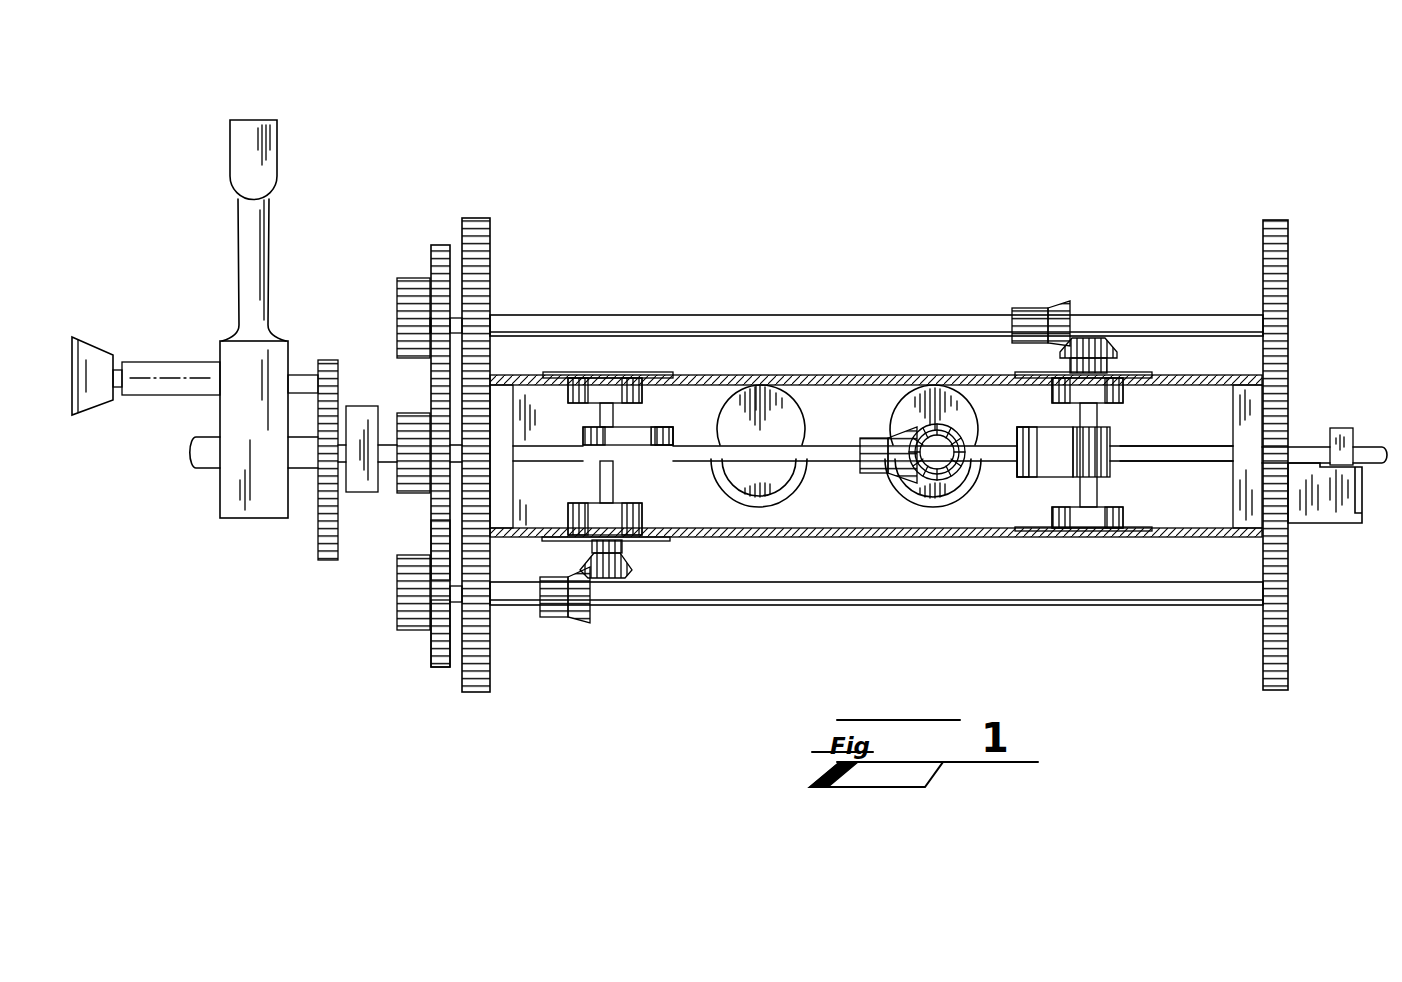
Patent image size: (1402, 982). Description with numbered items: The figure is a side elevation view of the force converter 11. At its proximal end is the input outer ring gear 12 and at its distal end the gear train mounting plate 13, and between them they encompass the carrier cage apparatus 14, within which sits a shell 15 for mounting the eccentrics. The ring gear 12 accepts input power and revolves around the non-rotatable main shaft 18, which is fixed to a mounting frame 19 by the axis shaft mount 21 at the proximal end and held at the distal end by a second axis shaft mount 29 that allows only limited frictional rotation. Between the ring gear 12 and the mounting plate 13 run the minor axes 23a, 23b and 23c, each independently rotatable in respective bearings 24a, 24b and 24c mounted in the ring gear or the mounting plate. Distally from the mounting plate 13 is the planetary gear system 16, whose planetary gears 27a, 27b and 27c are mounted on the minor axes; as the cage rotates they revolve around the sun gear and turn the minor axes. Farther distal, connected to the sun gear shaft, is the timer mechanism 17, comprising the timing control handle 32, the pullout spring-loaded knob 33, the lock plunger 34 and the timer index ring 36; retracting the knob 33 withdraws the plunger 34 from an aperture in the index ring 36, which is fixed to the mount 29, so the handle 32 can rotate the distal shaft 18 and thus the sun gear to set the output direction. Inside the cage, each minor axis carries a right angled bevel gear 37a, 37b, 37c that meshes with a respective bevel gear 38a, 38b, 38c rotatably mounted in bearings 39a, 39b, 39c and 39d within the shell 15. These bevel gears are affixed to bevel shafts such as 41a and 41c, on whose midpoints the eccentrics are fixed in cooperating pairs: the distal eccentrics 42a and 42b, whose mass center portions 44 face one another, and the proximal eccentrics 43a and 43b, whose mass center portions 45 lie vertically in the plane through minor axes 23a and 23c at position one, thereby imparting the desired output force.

The force converter 11 is at (866, 106).
The input outer ring gear 12 is at (1275, 220).
The gear train mounting plate 13 is at (475, 693).
The carrier cage apparatus 14 is at (634, 224).
The shell 15 is at (845, 538).
The planetary gear system 16 is at (404, 184).
The timer mechanism 17 is at (150, 180).
The main shaft 18 is at (302, 470).
The mounting frame 19 is at (1362, 502).
The axis shaft mount 21 is at (1355, 428).
The minor axis 23a is at (637, 315).
The minor axis 23b is at (1195, 465).
The minor axis 23c is at (700, 590).
The bearing 24a is at (410, 297).
The bearing 24b is at (418, 425).
The bearing 24c is at (412, 632).
The planetary gear 27a is at (440, 245).
The planetary gear 27b is at (427, 545).
The planetary gear 27c is at (437, 668).
The axis shaft mount 29 is at (354, 406).
The timing control handle 32 is at (263, 145).
The pullout spring-loaded knob 33 is at (96, 345).
The lock plunger 34 is at (304, 375).
The timer index ring 36 is at (330, 360).
The right angled bevel gear 37a is at (1060, 300).
The right angled bevel gear 37b is at (873, 478).
The right angled bevel gear 37c is at (553, 597).
The bevel gear 38a is at (1083, 340).
The bevel gear 38b is at (960, 470).
The bevel gear 38c is at (628, 572).
The bearing 39a is at (1122, 395).
The bearing 39b is at (918, 490).
The bearing 39c is at (598, 385).
The bearing 39d is at (765, 500).
The bevel shaft 41a is at (1107, 415).
The bevel shaft 41c is at (613, 487).
The distal eccentric 42a is at (645, 430).
The distal eccentric 42b is at (1060, 430).
The proximal eccentric 43a is at (803, 422).
The proximal eccentric 43b is at (933, 382).
The mass center portion 44 is at (673, 438).
The mass center portion 45 is at (756, 384).